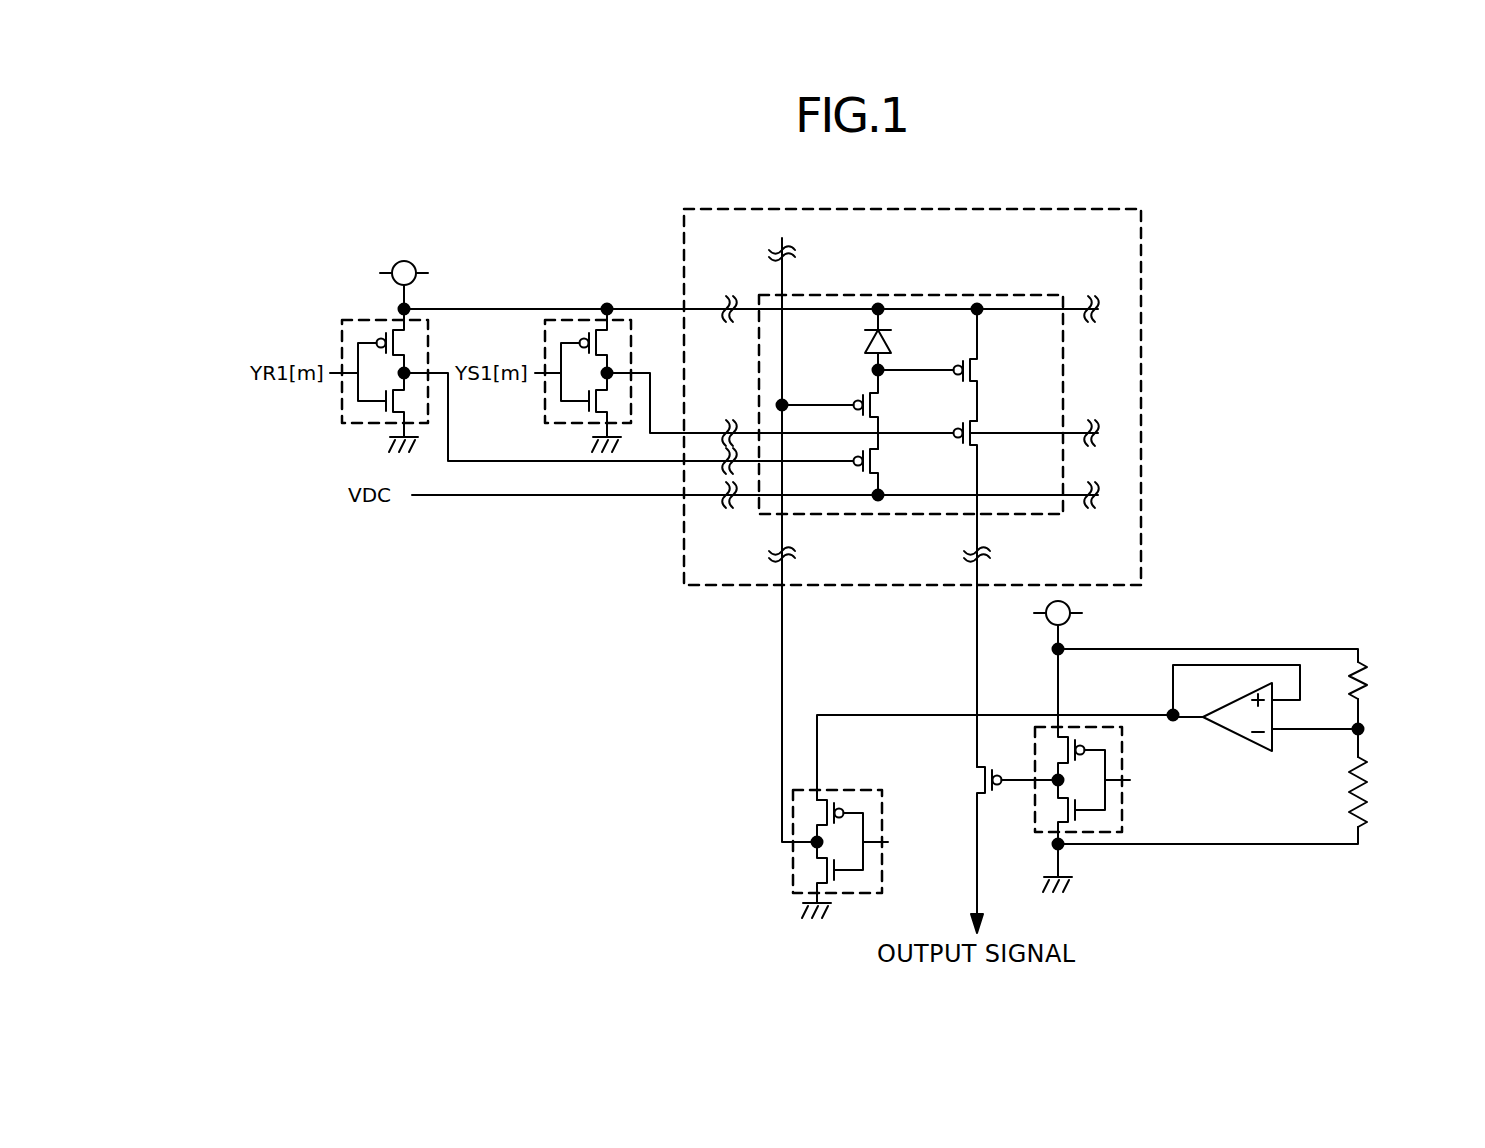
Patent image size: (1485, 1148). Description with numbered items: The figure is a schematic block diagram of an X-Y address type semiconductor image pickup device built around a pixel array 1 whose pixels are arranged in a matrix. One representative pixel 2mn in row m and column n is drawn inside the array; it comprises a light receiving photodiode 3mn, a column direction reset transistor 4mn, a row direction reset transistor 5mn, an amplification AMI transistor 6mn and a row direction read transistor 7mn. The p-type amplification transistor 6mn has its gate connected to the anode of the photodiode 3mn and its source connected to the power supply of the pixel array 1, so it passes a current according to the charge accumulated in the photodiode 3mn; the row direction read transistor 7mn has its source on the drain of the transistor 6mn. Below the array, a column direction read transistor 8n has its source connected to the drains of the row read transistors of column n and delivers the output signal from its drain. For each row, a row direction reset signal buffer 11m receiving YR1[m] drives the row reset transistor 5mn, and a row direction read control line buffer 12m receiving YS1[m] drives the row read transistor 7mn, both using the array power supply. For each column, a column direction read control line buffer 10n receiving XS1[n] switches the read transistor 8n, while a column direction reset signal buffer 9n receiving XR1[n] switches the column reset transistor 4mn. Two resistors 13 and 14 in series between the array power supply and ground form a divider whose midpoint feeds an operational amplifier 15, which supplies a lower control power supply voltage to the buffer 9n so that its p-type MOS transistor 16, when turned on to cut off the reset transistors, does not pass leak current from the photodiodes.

The pixel array 1 is at (1090, 209).
The pixel 2mn is at (990, 295).
The light receiving element (photodiode) 3mn is at (893, 345).
The column direction reset transistor 4mn is at (880, 415).
The row direction reset transistor 5mn is at (880, 476).
The amplification AMI transistor 6mn is at (974, 382).
The row direction read transistor 7mn is at (976, 445).
The column direction read transistor 8n is at (983, 786).
The column direction reset signal buffer 9n is at (882, 800).
The column direction read control line buffer 10n is at (1122, 735).
The row direction reset signal buffer 11m is at (352, 320).
The row direction read control line buffer 12m is at (572, 320).
The resistor 13 is at (1370, 688).
The resistor 14 is at (1370, 800).
The operational amplifier 15 is at (1254, 750).
The p-type MOS transistor 16 is at (827, 800).